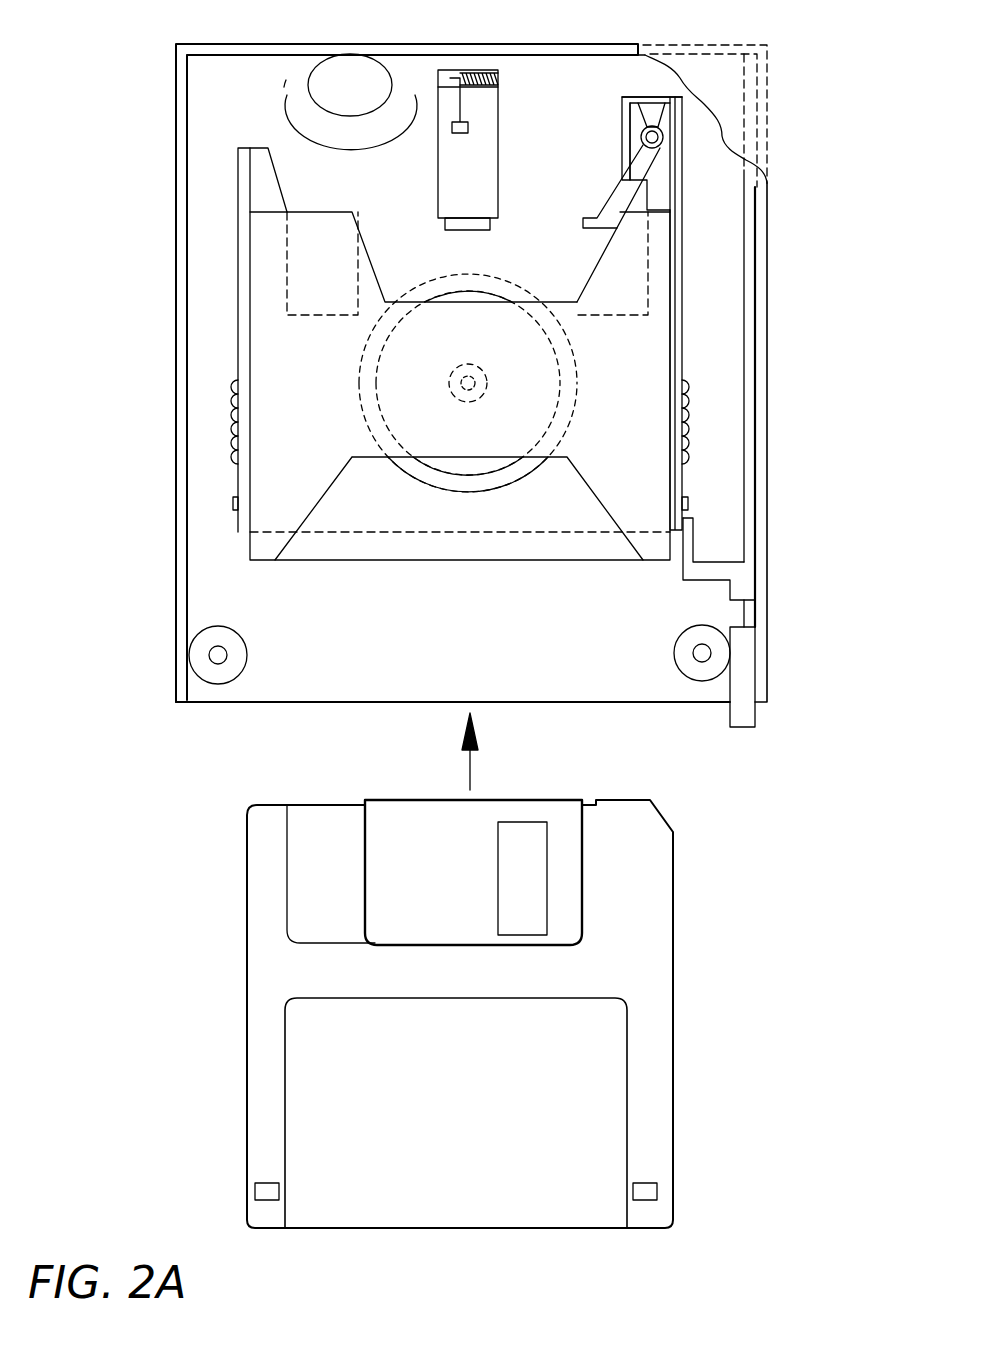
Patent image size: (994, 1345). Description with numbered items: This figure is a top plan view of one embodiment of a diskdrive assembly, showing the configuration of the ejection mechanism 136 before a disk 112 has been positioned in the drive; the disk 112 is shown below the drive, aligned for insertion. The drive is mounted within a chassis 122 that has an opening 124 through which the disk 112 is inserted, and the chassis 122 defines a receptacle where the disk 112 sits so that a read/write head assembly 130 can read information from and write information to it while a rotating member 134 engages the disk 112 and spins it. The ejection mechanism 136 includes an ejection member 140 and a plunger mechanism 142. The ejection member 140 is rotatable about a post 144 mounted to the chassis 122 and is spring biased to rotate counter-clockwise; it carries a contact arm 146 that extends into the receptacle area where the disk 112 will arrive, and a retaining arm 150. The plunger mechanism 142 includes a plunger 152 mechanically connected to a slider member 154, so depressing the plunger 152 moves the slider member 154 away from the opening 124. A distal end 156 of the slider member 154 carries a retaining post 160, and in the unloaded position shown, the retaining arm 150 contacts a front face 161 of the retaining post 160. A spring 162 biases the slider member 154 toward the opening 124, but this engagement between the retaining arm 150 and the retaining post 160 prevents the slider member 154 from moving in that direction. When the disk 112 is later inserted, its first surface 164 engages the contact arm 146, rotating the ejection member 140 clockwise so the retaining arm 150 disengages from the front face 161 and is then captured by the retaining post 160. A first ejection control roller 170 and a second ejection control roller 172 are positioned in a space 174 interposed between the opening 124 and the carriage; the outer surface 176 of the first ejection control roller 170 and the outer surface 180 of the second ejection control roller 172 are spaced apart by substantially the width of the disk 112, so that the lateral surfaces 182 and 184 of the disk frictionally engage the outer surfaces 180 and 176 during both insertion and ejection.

The disk 112 is at (480, 1090).
The chassis 122 is at (182, 606).
The opening 124 is at (240, 715).
The read/write head assembly 130 is at (462, 170).
The rotating member 134 is at (470, 300).
The ejection mechanism 136 is at (720, 170).
The ejection member 140 is at (660, 165).
The plunger mechanism 142 is at (707, 391).
The post 144 is at (641, 137).
The contact arm 146 is at (613, 190).
The retaining arm 150 is at (683, 97).
The plunger 152 is at (744, 712).
The slider member 154 is at (678, 292).
The distal end 156 is at (622, 76).
The retaining post 160 is at (645, 97).
The front face 161 is at (630, 118).
The spring 162 is at (690, 442).
The first surface 164 is at (272, 805).
The first ejection control roller 170 is at (705, 683).
The second ejection control roller 172 is at (213, 683).
The space 174 is at (520, 618).
The outer surface 176 is at (684, 628).
The outer surface 180 is at (247, 657).
The lateral surface 182 is at (668, 1003).
The lateral surface 184 is at (247, 1020).